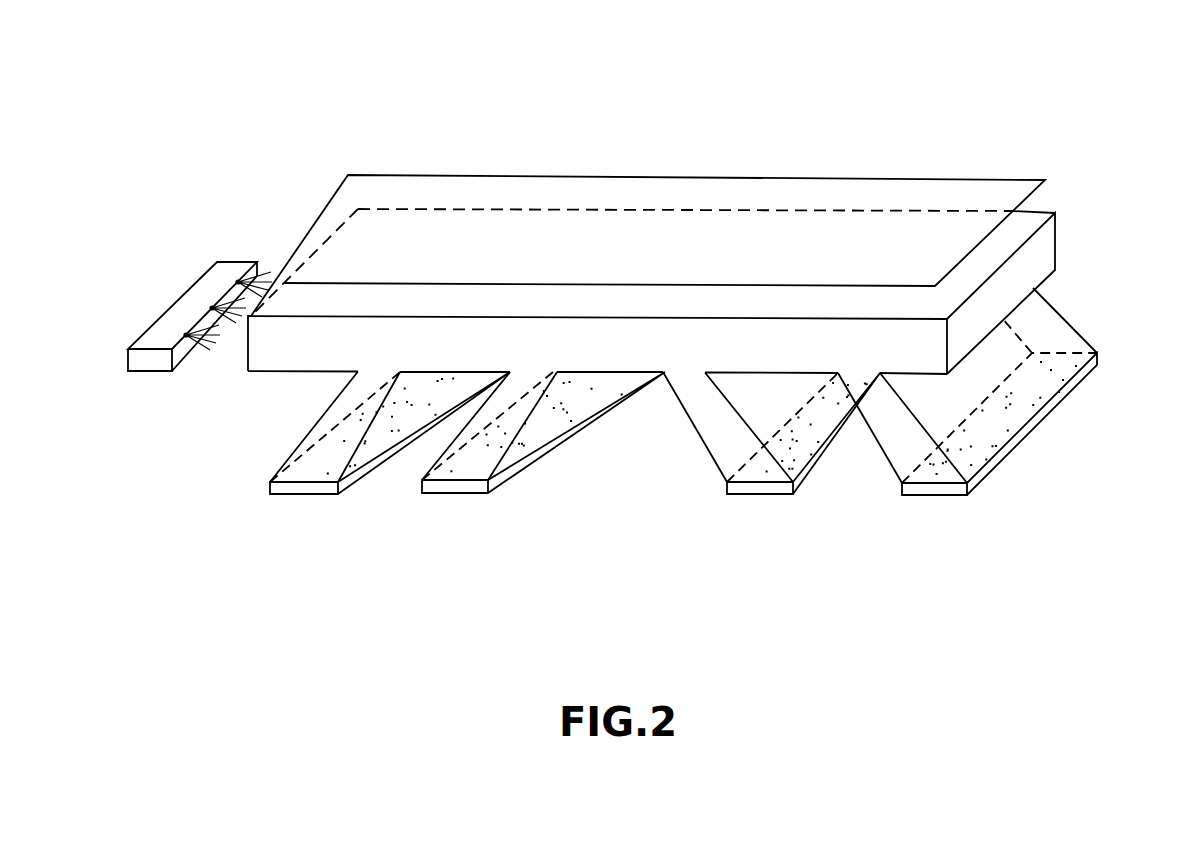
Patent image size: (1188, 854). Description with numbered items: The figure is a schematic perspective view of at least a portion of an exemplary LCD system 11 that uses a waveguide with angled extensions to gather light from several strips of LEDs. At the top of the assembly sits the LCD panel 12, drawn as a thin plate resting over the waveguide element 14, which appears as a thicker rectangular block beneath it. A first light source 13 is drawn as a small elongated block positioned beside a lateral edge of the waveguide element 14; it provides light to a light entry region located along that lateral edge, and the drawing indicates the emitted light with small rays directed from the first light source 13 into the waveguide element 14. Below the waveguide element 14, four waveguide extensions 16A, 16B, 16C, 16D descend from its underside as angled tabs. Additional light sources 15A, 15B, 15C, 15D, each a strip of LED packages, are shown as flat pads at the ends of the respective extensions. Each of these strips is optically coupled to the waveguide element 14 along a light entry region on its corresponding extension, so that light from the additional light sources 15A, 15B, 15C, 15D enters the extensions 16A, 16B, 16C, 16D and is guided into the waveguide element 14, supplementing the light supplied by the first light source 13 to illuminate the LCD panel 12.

The LCD system 11 is at (347, 123).
The LCD panel 12 is at (818, 176).
The first light source 13 is at (157, 317).
The waveguide element 14 is at (1058, 224).
The additional light source 15A is at (930, 496).
The additional light source 15B is at (760, 495).
The additional light source 15C is at (478, 494).
The additional light source 15D is at (292, 495).
The waveguide extension 16A is at (883, 453).
The waveguide extension 16B is at (693, 428).
The waveguide extension 16C is at (432, 468).
The waveguide extension 16D is at (327, 413).